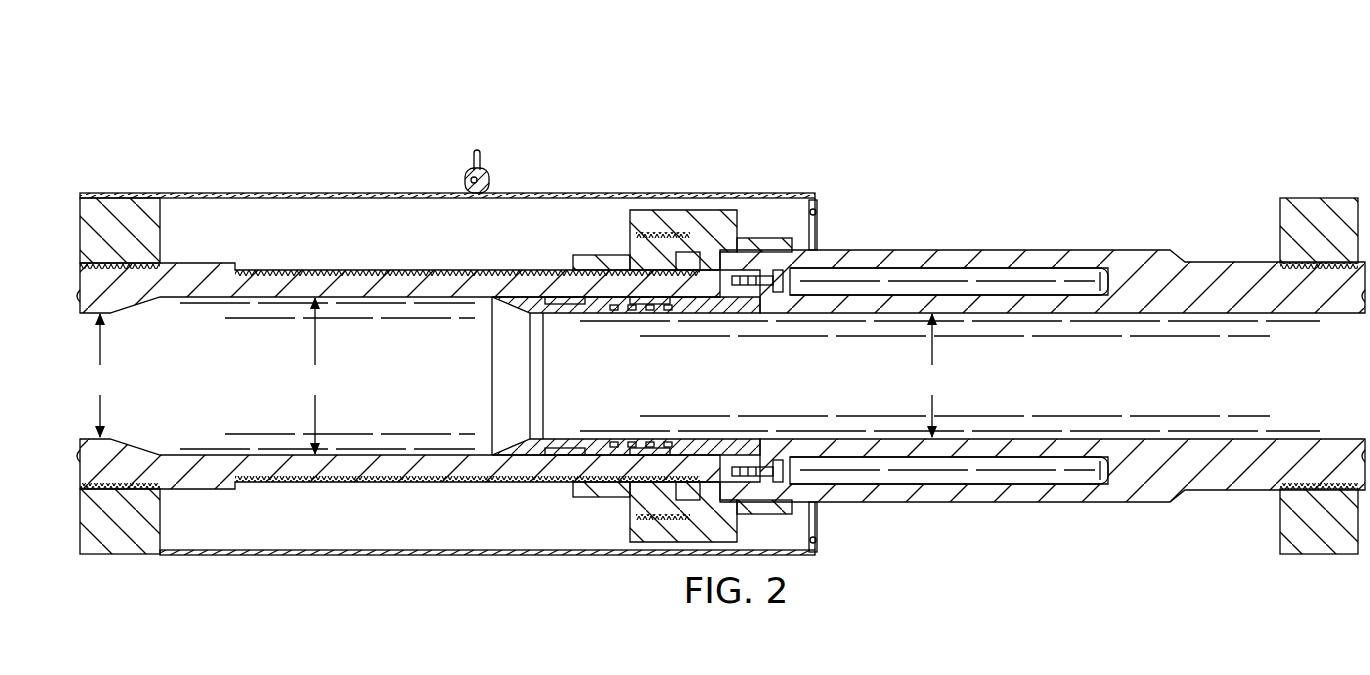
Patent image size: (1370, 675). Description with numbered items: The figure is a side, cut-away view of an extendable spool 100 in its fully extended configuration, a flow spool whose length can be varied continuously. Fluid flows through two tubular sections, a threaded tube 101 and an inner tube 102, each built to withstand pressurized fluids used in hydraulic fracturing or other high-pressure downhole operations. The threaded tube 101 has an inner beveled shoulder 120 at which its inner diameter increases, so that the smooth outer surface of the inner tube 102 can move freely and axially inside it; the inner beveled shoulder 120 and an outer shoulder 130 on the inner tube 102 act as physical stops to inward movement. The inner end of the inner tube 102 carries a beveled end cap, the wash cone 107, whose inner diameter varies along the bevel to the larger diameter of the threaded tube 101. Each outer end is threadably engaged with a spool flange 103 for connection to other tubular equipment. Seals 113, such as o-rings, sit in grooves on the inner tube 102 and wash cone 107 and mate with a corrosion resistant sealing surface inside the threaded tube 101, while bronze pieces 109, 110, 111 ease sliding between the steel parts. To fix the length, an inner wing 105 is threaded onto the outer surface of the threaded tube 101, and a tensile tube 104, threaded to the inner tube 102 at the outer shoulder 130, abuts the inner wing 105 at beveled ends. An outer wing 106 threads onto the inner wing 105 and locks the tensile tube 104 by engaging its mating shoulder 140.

The extendable spool 100 is at (362, 96).
The threaded tube 101 is at (188, 492).
The inner tube 102 is at (1218, 260).
The spool flange 103 is at (160, 252).
The tensile tube 104 is at (980, 502).
The inner wing 105 is at (592, 257).
The outer wing 106 is at (742, 238).
The wash cone 107 is at (490, 387).
The bronze piece 109 is at (683, 280).
The bronze piece 110 is at (756, 455).
The bronze piece 111 is at (600, 455).
The seals 113 is at (682, 455).
The inner beveled shoulder 120 is at (156, 374).
The outer shoulder 130 is at (1093, 286).
The mating shoulder 140 is at (705, 248).